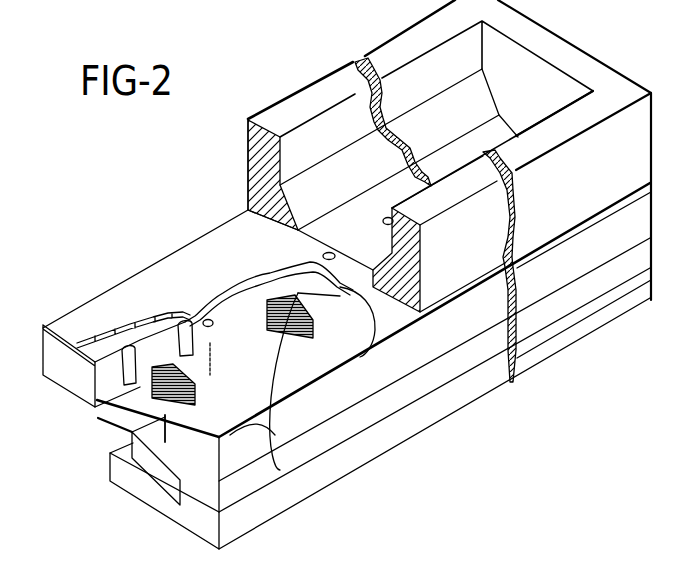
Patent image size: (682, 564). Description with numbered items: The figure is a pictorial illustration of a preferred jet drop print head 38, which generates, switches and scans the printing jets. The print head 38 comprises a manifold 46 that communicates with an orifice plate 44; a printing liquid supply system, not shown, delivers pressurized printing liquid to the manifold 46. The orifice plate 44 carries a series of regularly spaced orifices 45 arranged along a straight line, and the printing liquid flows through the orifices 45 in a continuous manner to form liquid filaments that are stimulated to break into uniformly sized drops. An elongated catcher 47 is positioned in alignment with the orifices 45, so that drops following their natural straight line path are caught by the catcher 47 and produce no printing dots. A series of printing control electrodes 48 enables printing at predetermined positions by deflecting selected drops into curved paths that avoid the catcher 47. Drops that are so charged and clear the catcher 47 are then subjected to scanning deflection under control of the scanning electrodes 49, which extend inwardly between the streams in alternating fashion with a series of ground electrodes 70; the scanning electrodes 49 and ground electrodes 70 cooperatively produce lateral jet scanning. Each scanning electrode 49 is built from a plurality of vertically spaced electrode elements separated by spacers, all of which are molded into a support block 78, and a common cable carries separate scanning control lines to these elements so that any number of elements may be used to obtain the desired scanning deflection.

The print head 38 is at (150, 187).
The orifice plate 44 is at (122, 328).
The orifices 45 is at (326, 257).
The manifold 46 is at (260, 160).
The catcher 47 is at (162, 507).
The printing control electrodes 48 is at (100, 392).
The scanning electrodes 49 is at (275, 435).
The ground electrodes 70 is at (132, 428).
The support block 78 is at (117, 482).